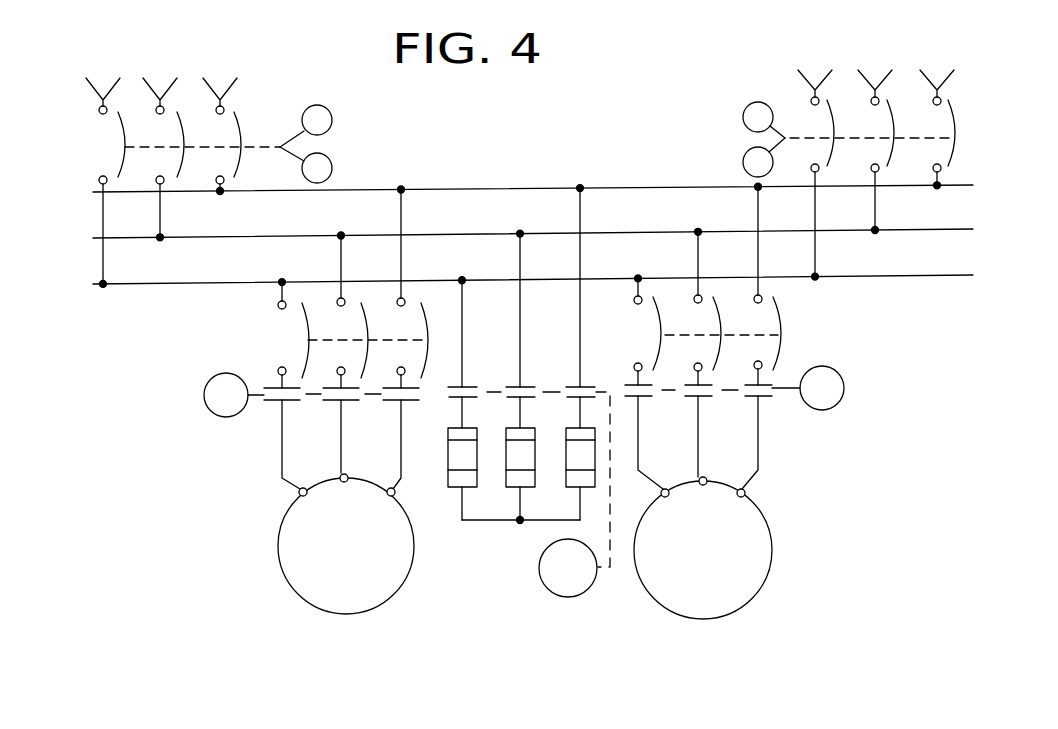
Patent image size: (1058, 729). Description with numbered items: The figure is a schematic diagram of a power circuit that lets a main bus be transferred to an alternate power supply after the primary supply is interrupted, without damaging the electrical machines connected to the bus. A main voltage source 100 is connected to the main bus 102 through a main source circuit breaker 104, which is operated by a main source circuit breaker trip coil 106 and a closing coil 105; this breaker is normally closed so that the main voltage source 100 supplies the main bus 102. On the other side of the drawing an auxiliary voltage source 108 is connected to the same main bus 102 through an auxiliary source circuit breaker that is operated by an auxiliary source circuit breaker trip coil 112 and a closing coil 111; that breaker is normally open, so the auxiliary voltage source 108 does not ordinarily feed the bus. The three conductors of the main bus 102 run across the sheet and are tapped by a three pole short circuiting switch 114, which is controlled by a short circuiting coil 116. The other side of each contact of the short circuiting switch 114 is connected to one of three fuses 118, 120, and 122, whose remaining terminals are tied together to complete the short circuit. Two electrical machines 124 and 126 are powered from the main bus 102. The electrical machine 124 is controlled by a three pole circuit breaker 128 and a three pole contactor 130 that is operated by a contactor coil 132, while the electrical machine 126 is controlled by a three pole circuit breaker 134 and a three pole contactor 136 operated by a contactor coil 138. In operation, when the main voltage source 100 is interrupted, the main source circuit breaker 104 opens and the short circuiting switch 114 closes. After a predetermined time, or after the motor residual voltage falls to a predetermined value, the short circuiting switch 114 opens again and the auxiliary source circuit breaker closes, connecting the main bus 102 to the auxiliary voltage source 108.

The main voltage source 100 is at (257, 78).
The main bus 102 is at (100, 177).
The main source circuit breaker 104 is at (125, 146).
The closing coil 105 is at (333, 121).
The main source circuit breaker trip coil 106 is at (333, 168).
The auxiliary voltage source 108 is at (965, 69).
The closing coil 111 is at (742, 117).
The auxiliary source circuit breaker trip coil 112 is at (742, 162).
The three pole short circuiting switch 114 is at (576, 377).
The short circuiting coil 116 is at (540, 571).
The fuse 118 is at (448, 470).
The fuse 120 is at (506, 468).
The fuse 122 is at (566, 467).
The electrical machine 124 is at (279, 563).
The electrical machine 126 is at (772, 566).
The three pole circuit breaker 128 is at (295, 340).
The three pole contactor 130 is at (288, 405).
The contactor coil 132 is at (210, 411).
The three pole circuit breaker 134 is at (786, 343).
The three pole contactor 136 is at (646, 402).
The contactor coil 138 is at (840, 398).